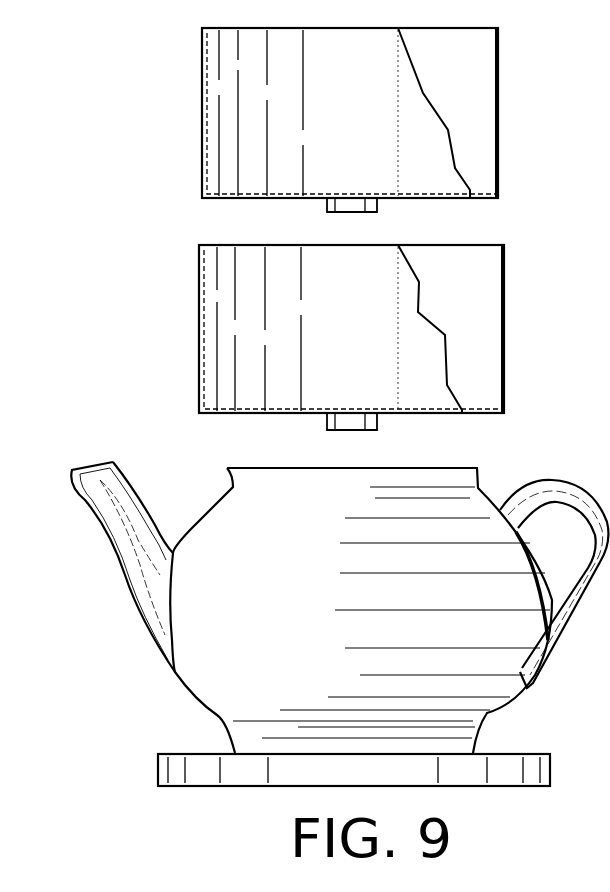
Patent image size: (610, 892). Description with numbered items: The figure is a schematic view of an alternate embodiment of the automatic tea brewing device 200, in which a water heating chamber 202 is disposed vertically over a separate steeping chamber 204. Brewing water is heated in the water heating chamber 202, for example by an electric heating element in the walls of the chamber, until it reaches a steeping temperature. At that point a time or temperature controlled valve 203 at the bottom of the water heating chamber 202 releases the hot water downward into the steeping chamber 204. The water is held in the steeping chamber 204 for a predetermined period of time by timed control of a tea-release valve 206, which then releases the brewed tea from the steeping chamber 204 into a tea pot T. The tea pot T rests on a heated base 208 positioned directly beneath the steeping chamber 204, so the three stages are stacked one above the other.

The automatic tea brewing device 200 is at (165, 75).
The water heating chamber 202 is at (480, 100).
The time or temperature controlled valve 203 is at (370, 213).
The steeping chamber 204 is at (480, 323).
The tea-release valve 206 is at (370, 430).
The heated base 208 is at (245, 777).
The tea pot T is at (247, 633).